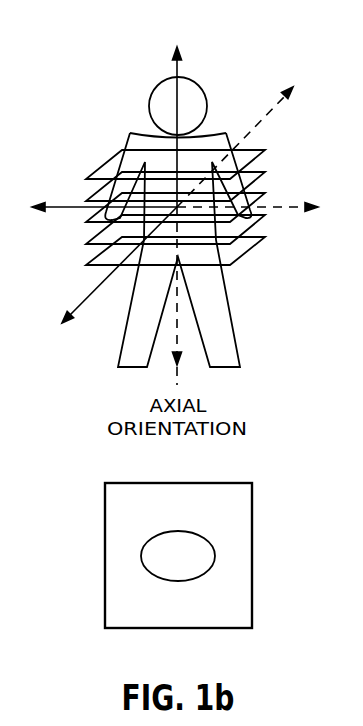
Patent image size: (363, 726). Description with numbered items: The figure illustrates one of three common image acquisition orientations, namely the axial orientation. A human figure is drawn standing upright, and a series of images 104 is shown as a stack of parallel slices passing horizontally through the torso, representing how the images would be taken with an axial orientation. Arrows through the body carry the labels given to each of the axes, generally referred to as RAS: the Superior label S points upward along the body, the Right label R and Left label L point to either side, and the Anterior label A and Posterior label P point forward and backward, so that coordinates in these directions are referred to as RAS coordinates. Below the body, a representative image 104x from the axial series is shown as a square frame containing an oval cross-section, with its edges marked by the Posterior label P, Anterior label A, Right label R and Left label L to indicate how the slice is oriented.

The series of images 104 is at (262, 271).
The representative image 104x is at (252, 618).
The Superior axis label S is at (177, 115).
The Right axis label R is at (94, 207).
The Anterior axis label A is at (109, 277).
The Posterior axis label P is at (244, 136).
The Left axis label L is at (258, 207).